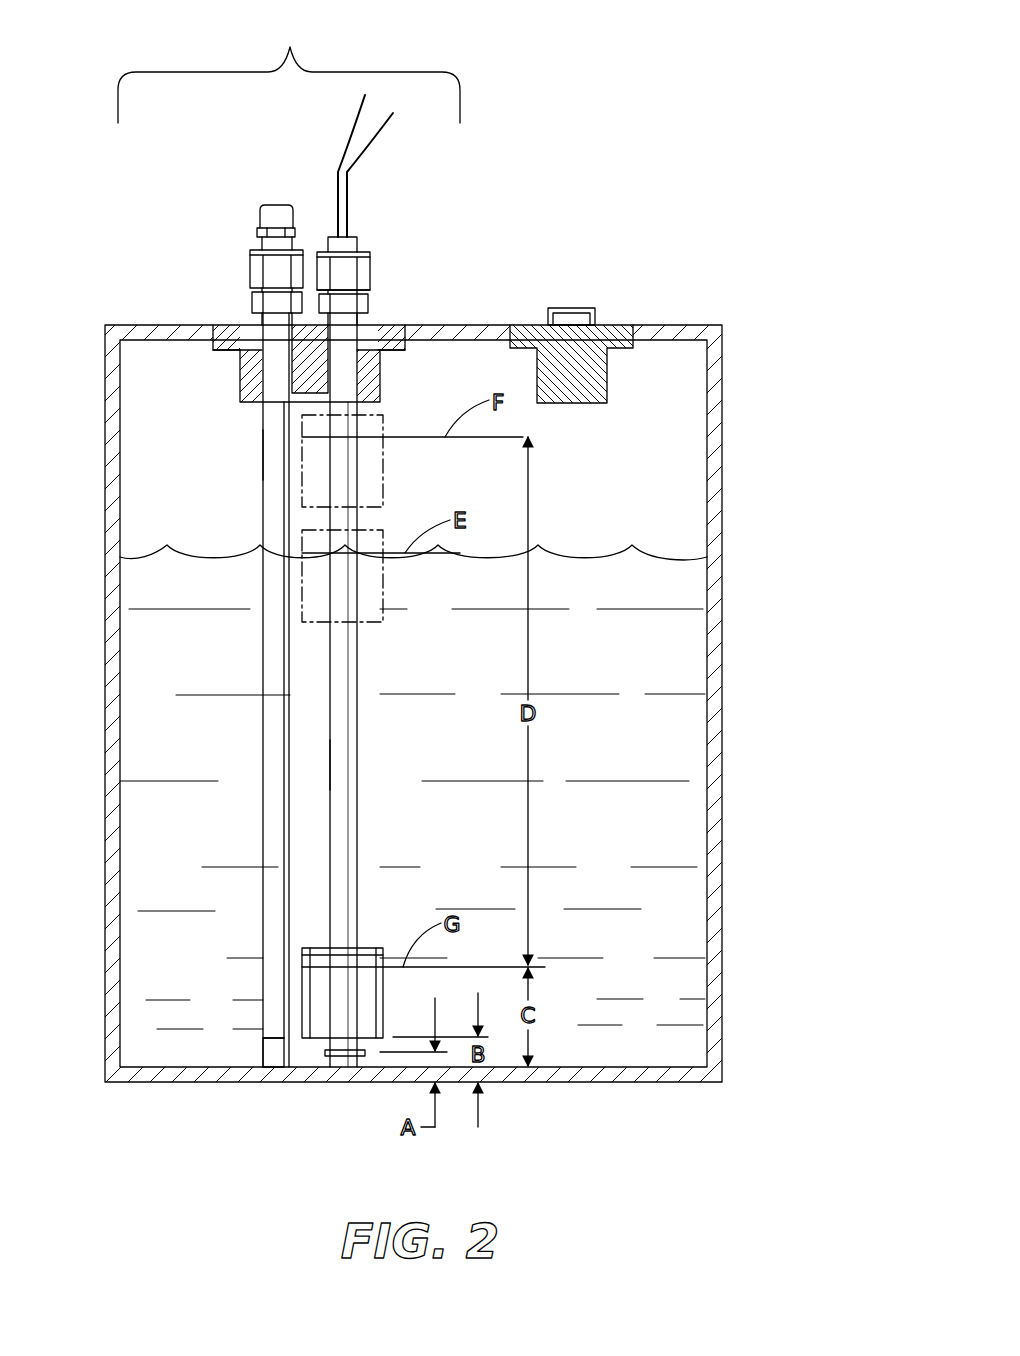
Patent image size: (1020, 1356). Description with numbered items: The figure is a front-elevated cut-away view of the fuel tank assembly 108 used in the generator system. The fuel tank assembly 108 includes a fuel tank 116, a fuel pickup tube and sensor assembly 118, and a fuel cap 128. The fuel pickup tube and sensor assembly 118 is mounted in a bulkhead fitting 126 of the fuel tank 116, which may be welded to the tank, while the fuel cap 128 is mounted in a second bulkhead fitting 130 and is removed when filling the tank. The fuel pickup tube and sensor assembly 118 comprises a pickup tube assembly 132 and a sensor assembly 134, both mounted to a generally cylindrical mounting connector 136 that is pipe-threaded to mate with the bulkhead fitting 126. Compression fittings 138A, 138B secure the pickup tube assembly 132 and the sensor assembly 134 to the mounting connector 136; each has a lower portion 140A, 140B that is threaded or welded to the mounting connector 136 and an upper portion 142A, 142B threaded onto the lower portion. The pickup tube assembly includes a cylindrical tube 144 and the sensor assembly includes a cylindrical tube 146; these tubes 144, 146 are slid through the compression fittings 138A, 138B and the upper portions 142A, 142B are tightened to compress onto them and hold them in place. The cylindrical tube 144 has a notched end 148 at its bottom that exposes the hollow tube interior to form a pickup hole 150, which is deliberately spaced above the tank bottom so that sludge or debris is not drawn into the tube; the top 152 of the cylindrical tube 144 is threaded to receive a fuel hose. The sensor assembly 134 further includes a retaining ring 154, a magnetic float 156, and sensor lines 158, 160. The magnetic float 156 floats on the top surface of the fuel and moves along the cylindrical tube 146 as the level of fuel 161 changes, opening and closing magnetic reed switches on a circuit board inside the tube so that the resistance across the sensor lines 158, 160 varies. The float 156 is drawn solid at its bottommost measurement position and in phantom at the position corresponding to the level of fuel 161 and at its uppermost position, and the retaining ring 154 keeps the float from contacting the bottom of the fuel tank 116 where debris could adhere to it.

The fuel tank assembly 108 is at (664, 127).
The fuel tank 116 is at (722, 408).
The fuel pickup tube and sensor assembly 118 is at (290, 47).
The bulkhead fitting 126 is at (402, 322).
The fuel cap 128 is at (600, 325).
The second bulkhead fitting 130 is at (627, 327).
The pickup tube assembly 132 is at (259, 522).
The sensor assembly 134 is at (362, 675).
The mounting connector 136 is at (235, 330).
The compression fitting 138A is at (250, 253).
The compression fitting 138B is at (375, 248).
The lower portion 140A is at (252, 303).
The lower portion 140B is at (373, 308).
The upper portion 142A is at (246, 270).
The upper portion 142B is at (372, 268).
The cylindrical tube 144 is at (262, 462).
The cylindrical tube 146 is at (362, 760).
The notched end 148 is at (262, 1042).
The pickup hole 150 is at (275, 1038).
The top 152 is at (274, 205).
The retaining ring 154 is at (325, 1053).
The magnetic float 156 is at (368, 946).
The sensor line 158 is at (345, 135).
The sensor line 160 is at (385, 138).
The level of fuel 161 is at (553, 553).